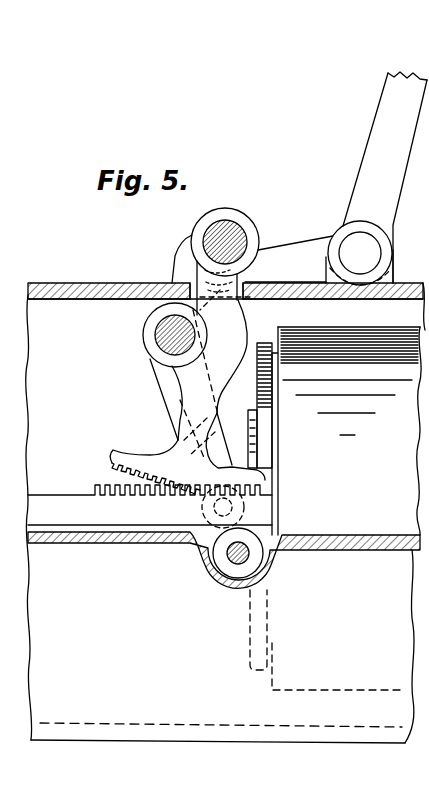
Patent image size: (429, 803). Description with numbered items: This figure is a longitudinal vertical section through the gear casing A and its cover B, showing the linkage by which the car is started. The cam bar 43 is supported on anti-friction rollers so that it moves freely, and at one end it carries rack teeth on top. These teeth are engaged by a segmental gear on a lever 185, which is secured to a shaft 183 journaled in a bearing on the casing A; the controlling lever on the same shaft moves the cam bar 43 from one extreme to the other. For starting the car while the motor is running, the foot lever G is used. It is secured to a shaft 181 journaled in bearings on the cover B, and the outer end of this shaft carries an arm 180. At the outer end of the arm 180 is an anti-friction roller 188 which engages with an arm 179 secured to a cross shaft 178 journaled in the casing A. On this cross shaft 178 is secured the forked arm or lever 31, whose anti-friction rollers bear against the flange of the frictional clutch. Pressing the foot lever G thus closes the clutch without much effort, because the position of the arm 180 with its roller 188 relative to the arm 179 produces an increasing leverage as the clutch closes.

The gear casing A is at (215, 519).
The cover B is at (73, 283).
The foot lever G is at (385, 177).
The forked arm or lever 31 is at (167, 382).
The cam bar 43 is at (150, 505).
The cross shaft 178 is at (158, 339).
The arm 179 is at (206, 262).
The arm 180 is at (310, 241).
The shaft 181 is at (359, 253).
The shaft 183 is at (253, 233).
The lever 185 is at (247, 344).
The anti-friction roller 188 is at (248, 271).